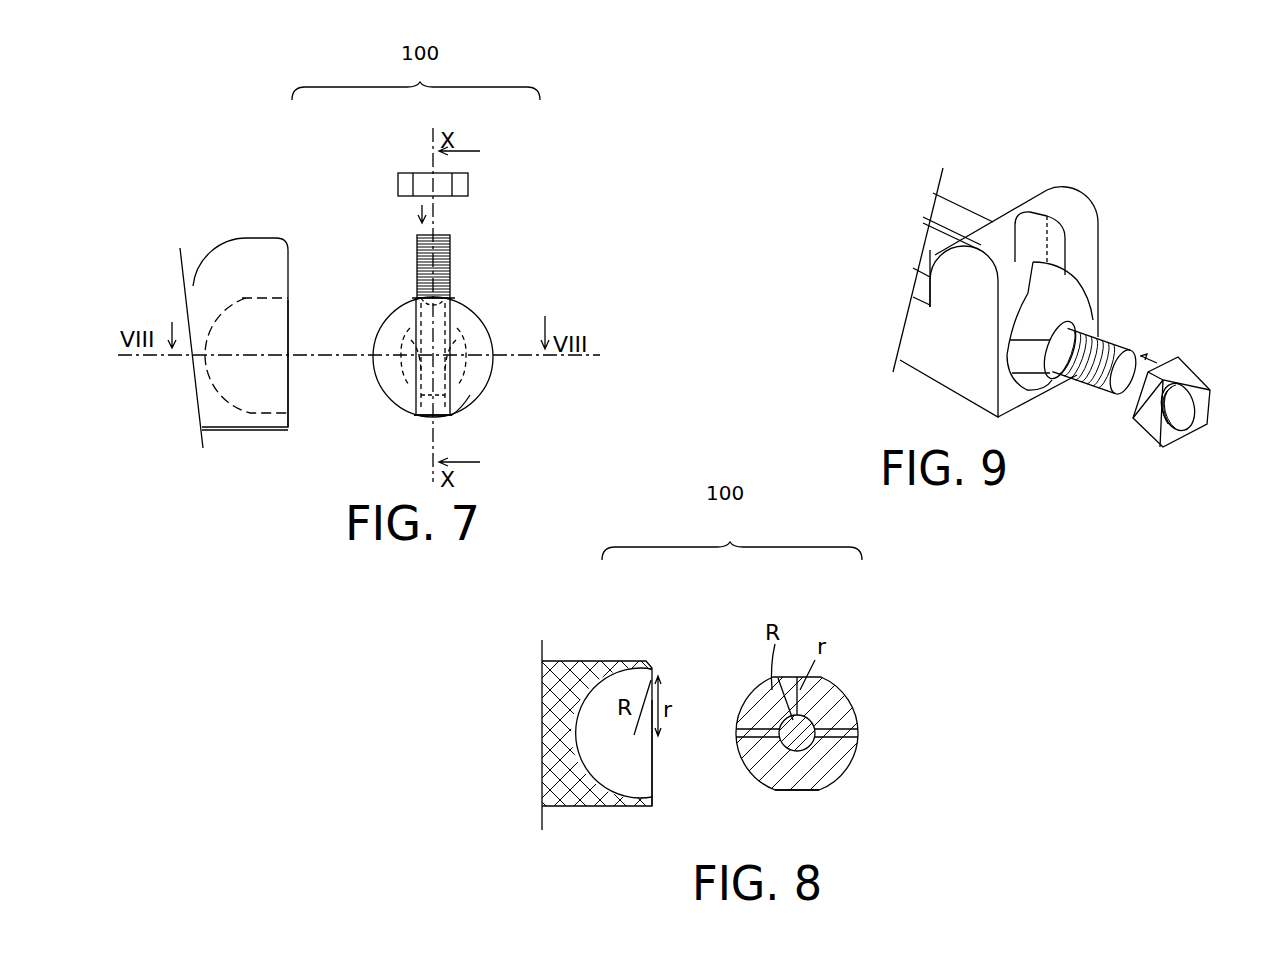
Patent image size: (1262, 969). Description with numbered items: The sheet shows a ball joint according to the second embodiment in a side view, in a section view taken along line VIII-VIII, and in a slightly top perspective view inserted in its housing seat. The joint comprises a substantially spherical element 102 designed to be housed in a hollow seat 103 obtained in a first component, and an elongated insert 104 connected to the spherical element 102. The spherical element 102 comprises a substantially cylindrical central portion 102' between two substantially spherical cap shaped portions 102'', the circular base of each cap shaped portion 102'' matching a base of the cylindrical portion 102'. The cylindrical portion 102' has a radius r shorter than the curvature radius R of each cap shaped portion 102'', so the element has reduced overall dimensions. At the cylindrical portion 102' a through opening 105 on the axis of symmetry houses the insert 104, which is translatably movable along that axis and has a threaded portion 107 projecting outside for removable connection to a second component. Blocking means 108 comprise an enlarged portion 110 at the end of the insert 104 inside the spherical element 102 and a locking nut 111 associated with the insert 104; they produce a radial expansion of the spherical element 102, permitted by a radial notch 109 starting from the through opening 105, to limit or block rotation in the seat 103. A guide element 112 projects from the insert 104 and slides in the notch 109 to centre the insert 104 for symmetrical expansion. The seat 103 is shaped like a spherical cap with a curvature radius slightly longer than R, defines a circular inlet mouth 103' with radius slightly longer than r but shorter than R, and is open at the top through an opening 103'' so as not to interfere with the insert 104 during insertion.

In FIG. 7, the spherical element 102 is at (506, 341).
In FIG. 8, the spherical element 102 is at (852, 730).
In FIG. 7, the substantially cylindrical central portion 102' is at (402, 435).
In FIG. 8, the substantially cylindrical central portion 102' is at (837, 806).
In FIG. 7, the substantially spherical cap shaped portions 102'' is at (469, 328).
In FIG. 8, the substantially spherical cap shaped portions 102'' is at (848, 751).
In FIG. 7, the hollow seat 103 is at (234, 366).
In FIG. 8, the hollow seat 103 is at (690, 719).
In FIG. 7, the inlet mouth 103' is at (308, 397).
In FIG. 8, the inlet mouth 103' is at (676, 776).
In FIG. 9, the opening 103'' is at (995, 275).
In FIG. 7, the insert 104 is at (414, 300).
In FIG. 7, the through opening 105 is at (490, 395).
In FIG. 7, the threaded portion 107 is at (452, 250).
In FIG. 9, the threaded portion 107 is at (1118, 343).
In FIG. 7, the blocking means 108 is at (345, 186).
In FIG. 9, the blocking means 108 is at (1155, 460).
In FIG. 9, the notch 109 is at (1093, 291).
In FIG. 8, the notch 109 is at (855, 733).
In FIG. 7, the enlarged portion 110 is at (468, 415).
In FIG. 7, the locking nut 111 is at (418, 185).
In FIG. 9, the locking nut 111 is at (1150, 430).
In FIG. 7, the guide element 112 is at (458, 345).
In FIG. 8, the guide element 112 is at (770, 720).